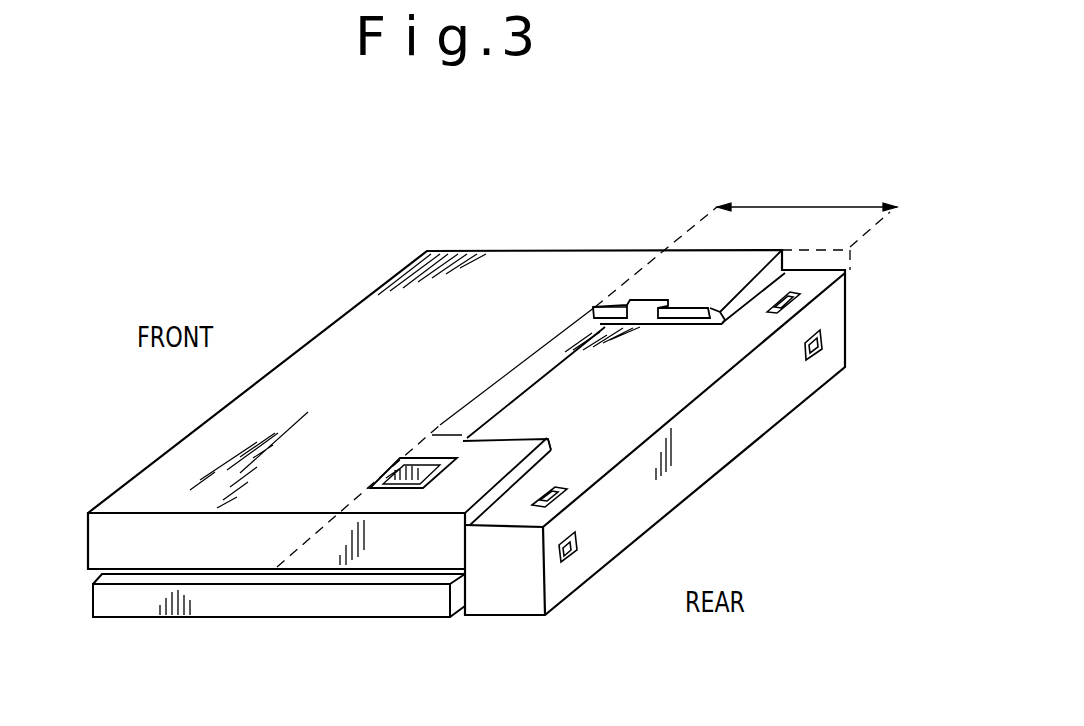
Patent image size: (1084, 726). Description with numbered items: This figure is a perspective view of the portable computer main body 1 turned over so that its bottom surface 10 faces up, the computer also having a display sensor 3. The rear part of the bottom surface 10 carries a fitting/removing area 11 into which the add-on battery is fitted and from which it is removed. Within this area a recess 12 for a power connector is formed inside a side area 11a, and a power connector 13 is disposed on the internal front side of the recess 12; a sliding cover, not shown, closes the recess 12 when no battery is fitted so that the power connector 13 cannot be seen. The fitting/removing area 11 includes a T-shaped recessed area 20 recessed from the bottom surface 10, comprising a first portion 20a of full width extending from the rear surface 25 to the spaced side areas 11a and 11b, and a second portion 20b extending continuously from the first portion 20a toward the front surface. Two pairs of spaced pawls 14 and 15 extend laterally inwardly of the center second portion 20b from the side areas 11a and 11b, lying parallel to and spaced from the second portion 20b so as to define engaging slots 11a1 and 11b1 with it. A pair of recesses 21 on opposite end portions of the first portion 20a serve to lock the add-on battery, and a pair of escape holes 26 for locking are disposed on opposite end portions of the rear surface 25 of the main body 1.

The portable computer main body 1 is at (112, 550).
The display sensor 3 is at (306, 598).
The bottom surface 10 is at (495, 326).
The fitting/removing area 11 is at (587, 369).
The side area 11a is at (450, 497).
The engaging slot 11a1 is at (553, 462).
The side area 11b is at (692, 276).
The engaging slot 11b1 is at (720, 321).
The recess 12 is at (432, 468).
The power connector 13 is at (397, 460).
The pawls 14 is at (688, 318).
The pawls 15 is at (607, 307).
The recessed area 20 is at (630, 404).
The first portion 20a is at (667, 400).
The second portion 20b is at (567, 388).
The recesses 21 is at (530, 497).
The rear surface 25 is at (703, 446).
The escape holes 26 is at (573, 552).